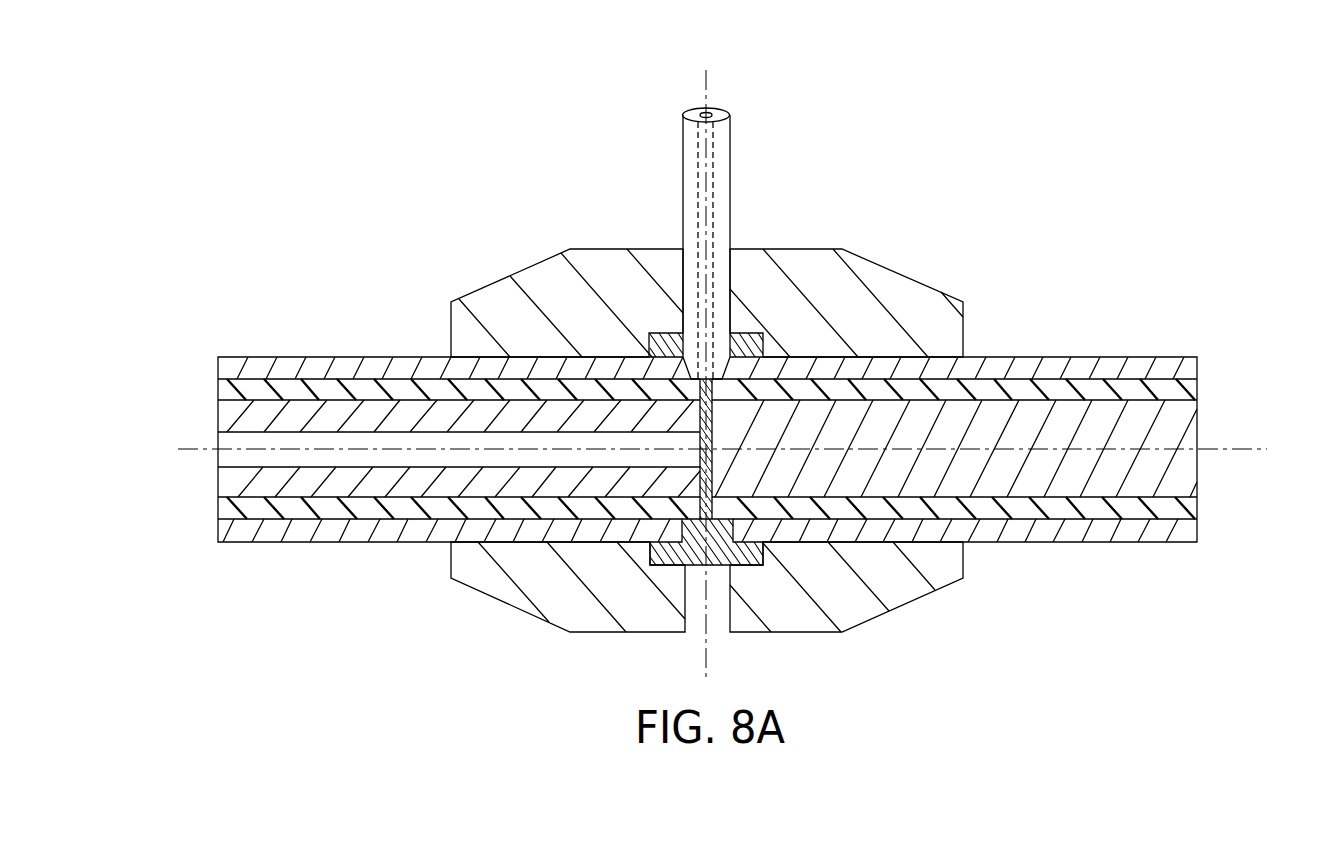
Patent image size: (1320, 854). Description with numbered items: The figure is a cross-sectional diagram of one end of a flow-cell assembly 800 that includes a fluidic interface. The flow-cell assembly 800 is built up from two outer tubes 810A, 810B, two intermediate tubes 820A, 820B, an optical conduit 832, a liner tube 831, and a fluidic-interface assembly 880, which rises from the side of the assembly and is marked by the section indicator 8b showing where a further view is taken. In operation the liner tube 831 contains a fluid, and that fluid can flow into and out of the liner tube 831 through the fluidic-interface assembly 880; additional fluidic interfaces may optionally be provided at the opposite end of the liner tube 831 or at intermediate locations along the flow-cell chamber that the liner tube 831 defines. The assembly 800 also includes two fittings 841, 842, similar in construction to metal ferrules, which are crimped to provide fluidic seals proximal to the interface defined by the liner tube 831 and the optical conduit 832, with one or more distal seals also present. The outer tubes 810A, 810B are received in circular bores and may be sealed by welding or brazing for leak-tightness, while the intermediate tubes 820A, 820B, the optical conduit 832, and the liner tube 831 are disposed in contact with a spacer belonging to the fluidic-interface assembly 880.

The flow-cell assembly 800 is at (484, 118).
The section line 8b is at (696, 88).
The fluidic-interface assembly 880 is at (752, 205).
The fitting 841 is at (538, 263).
The fitting 842 is at (903, 275).
The outer tube 810A is at (340, 357).
The outer tube 810B is at (1085, 355).
The intermediate tube 820A is at (218, 393).
The intermediate tube 820B is at (1198, 387).
The liner tube 831 is at (218, 482).
The optical conduit 832 is at (1197, 478).